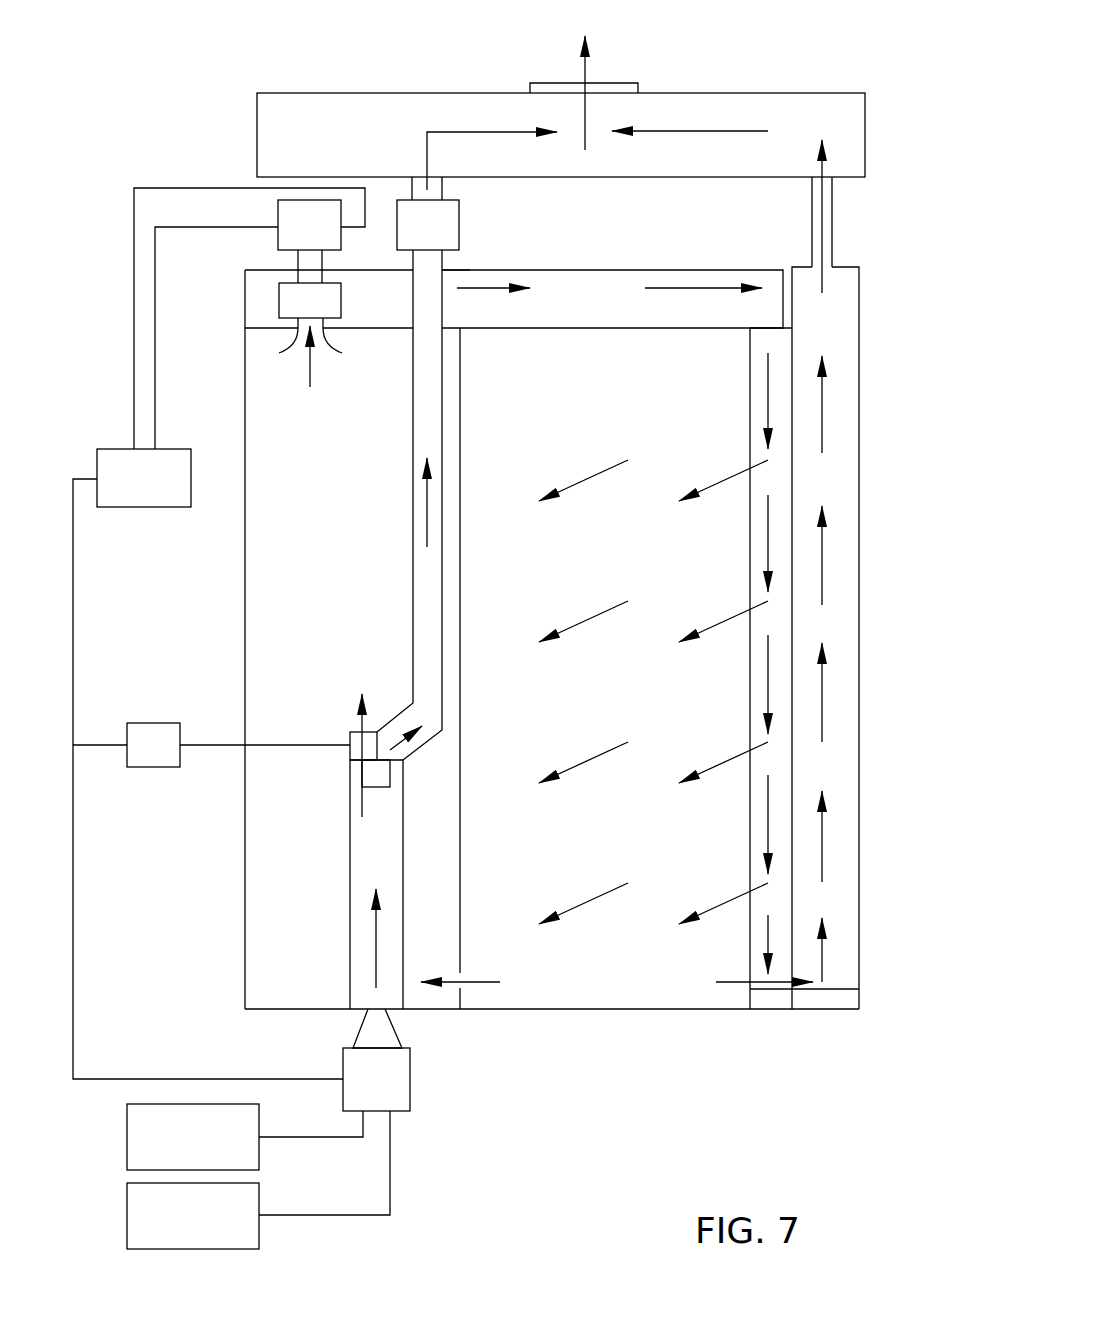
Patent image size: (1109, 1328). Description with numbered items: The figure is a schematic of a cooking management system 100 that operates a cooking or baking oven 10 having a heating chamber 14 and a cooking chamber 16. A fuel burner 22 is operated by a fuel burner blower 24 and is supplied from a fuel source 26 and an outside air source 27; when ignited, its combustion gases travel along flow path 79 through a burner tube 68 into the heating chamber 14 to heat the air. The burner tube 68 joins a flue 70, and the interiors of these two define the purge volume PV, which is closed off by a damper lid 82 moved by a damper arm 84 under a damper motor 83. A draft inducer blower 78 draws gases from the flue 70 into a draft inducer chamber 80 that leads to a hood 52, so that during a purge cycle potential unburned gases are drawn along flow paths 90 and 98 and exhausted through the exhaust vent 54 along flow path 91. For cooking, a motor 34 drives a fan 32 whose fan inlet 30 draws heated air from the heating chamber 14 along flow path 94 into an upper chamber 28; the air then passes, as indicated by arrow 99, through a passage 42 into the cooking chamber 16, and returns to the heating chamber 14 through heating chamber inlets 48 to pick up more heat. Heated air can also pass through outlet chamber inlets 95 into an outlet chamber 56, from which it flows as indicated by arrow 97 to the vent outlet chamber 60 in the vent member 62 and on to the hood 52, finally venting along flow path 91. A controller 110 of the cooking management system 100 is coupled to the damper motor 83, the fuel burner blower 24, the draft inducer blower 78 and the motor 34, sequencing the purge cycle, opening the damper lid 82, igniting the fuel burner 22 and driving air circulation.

The cooking or baking oven 10 is at (206, 921).
The heating chamber 14 is at (308, 639).
The cooking chamber 16 is at (614, 668).
The fuel burner 22 is at (360, 1028).
The fuel burner blower 24 is at (413, 1077).
The fuel source 26 is at (127, 1217).
The outside air source 27 is at (127, 1137).
The upper chamber 28 is at (514, 299).
The fan inlet 30 is at (292, 333).
The fan 32 is at (279, 293).
The motor 34 is at (278, 212).
The inlet passage 42 is at (781, 356).
The heating chamber inlets 48 is at (466, 989).
The hood 52 is at (870, 125).
The exhaust vent 54 is at (613, 79).
The outlet chamber 56 is at (826, 638).
The vent outlet chamber 60 is at (824, 248).
The vent member 62 is at (836, 180).
The burner tube 68 is at (376, 884).
The flue 70 is at (443, 572).
The draft inducer blower 78 is at (397, 205).
The flow path 79 is at (358, 698).
The draft inducer chamber 80 is at (446, 180).
The damper lid 82 is at (350, 743).
The damper motor 83 is at (155, 723).
The damper arm 84 is at (220, 750).
The flow path 90 is at (403, 957).
The flow path 91 is at (583, 117).
The flow path 94 is at (472, 274).
The outlet chamber inlets 95 is at (782, 992).
The arrow 97 is at (822, 690).
The flow path 98 is at (427, 498).
The arrow 99 is at (770, 403).
The cooking management system 100 is at (893, 603).
The controller 110 is at (131, 507).